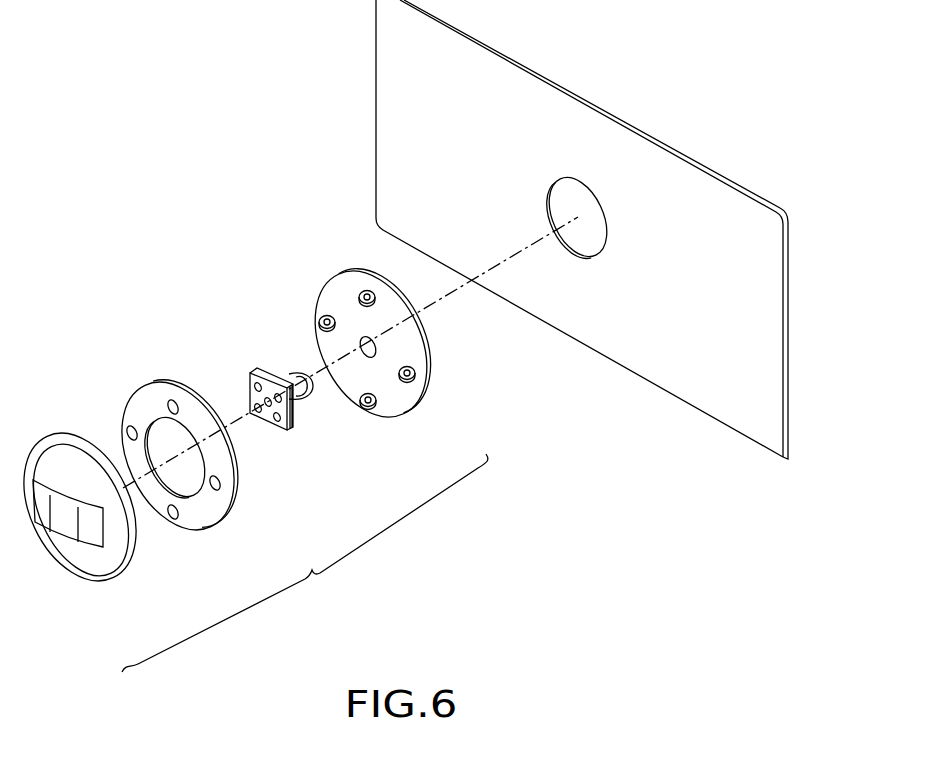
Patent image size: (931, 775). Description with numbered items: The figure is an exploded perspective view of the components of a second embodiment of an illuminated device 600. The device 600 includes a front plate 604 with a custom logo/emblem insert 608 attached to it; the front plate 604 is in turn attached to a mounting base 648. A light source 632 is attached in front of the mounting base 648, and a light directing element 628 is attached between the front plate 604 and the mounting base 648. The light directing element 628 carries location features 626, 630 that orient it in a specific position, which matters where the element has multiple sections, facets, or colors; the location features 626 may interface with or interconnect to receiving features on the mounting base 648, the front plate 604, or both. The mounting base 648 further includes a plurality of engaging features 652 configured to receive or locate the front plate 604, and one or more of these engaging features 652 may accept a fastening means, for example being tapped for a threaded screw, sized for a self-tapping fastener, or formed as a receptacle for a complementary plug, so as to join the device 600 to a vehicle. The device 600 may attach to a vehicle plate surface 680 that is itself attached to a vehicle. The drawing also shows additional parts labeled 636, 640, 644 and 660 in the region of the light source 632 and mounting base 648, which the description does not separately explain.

The illuminated device 600 is at (305, 563).
The front plate 604 is at (88, 580).
The custom logo/emblem insert 608 is at (57, 492).
The location features 626 is at (173, 400).
The light directing element 628 is at (207, 528).
The location feature 630 is at (192, 430).
The light source 632 is at (264, 355).
The module housing 636 is at (289, 436).
The module holes 640 is at (255, 384).
The connector 644 is at (302, 376).
The mounting base 648 is at (430, 420).
The engaging features 652 is at (320, 314).
The central opening 660 is at (364, 338).
The vehicle plate surface 680 is at (580, 98).